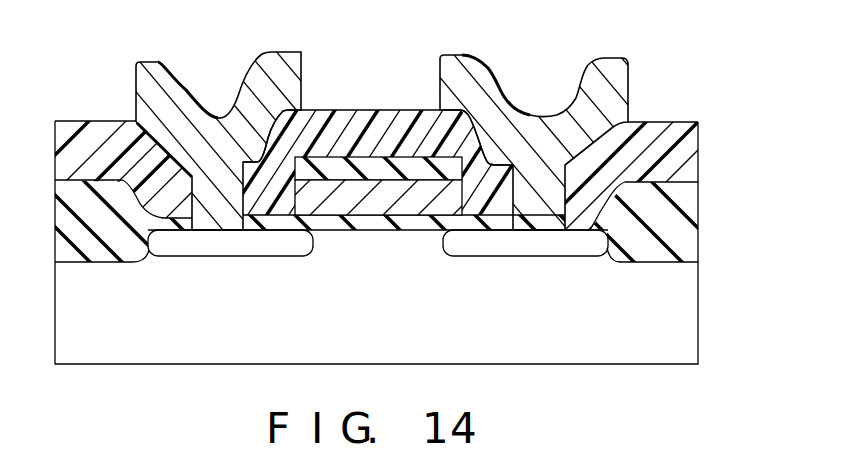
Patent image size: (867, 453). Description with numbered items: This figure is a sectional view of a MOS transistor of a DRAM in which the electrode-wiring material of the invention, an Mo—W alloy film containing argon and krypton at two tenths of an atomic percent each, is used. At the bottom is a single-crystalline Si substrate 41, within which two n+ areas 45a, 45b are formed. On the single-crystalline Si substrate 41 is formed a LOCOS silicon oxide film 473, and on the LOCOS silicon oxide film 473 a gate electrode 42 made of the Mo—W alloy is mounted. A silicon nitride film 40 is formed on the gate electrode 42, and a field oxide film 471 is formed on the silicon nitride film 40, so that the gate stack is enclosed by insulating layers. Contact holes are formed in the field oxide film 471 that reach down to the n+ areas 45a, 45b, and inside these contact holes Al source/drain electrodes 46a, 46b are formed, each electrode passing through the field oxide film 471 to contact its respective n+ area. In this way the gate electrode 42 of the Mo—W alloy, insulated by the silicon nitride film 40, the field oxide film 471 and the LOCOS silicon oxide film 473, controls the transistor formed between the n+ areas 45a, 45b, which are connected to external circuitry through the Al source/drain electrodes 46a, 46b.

The single-crystalline Si substrate 41 is at (686, 318).
The n+ area 45a is at (238, 247).
The n+ area 45b is at (530, 243).
The silicon nitride film 40 is at (408, 165).
The gate electrode 42 is at (345, 195).
The Al source/drain electrode 46a is at (155, 74).
The Al source/drain electrode 46b is at (612, 70).
The field oxide film 471 is at (668, 132).
The LOCOS silicon oxide film 473 is at (686, 238).